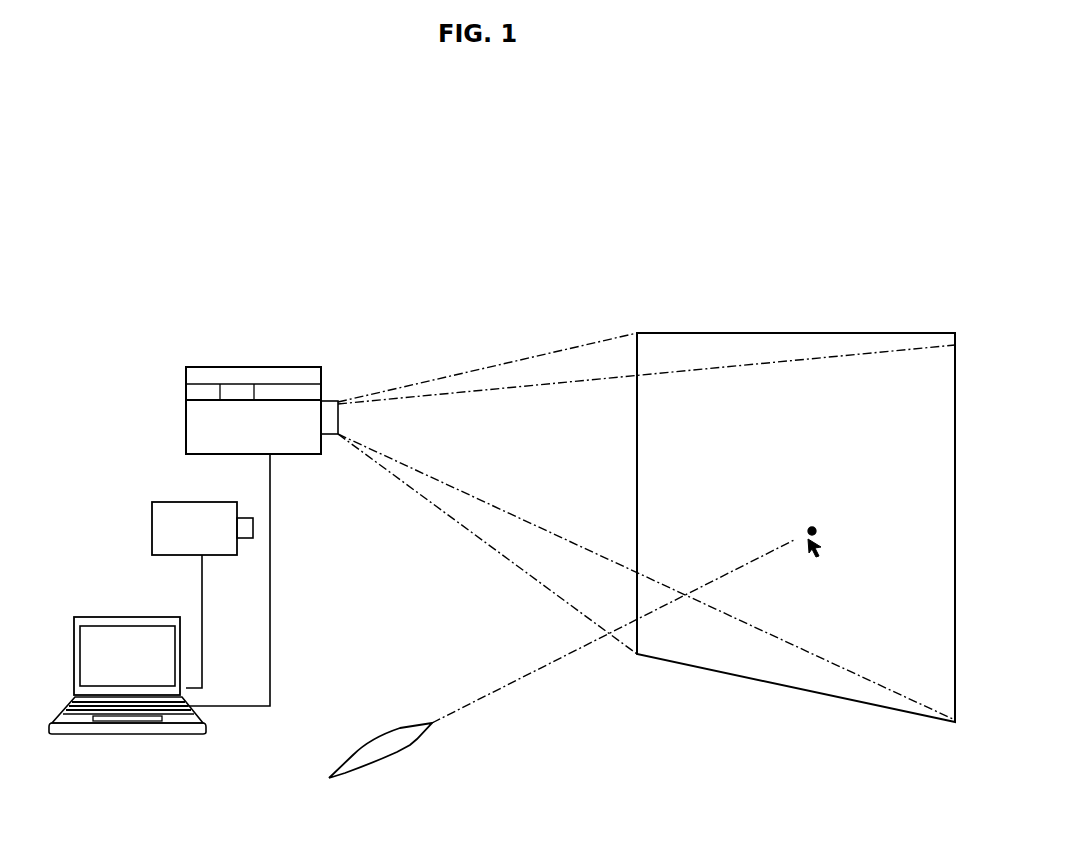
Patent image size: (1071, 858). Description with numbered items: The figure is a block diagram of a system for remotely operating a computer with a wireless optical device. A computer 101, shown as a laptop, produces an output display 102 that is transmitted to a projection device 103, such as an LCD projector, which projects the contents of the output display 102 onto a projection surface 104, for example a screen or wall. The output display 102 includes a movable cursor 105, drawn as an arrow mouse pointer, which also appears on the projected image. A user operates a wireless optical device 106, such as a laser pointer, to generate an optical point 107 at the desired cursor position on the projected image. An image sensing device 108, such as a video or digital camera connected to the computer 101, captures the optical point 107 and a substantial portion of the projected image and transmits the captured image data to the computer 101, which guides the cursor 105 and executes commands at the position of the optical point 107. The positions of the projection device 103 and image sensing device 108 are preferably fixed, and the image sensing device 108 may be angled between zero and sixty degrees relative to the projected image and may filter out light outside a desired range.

The computer 101 is at (127, 660).
The output display 102 is at (127, 656).
The projection device 103 is at (287, 367).
The projection surface 104 is at (773, 333).
The cursor 105 is at (832, 562).
The wireless optical device 106 is at (392, 755).
The optical point 107 is at (807, 522).
The image sensing device 108 is at (187, 502).